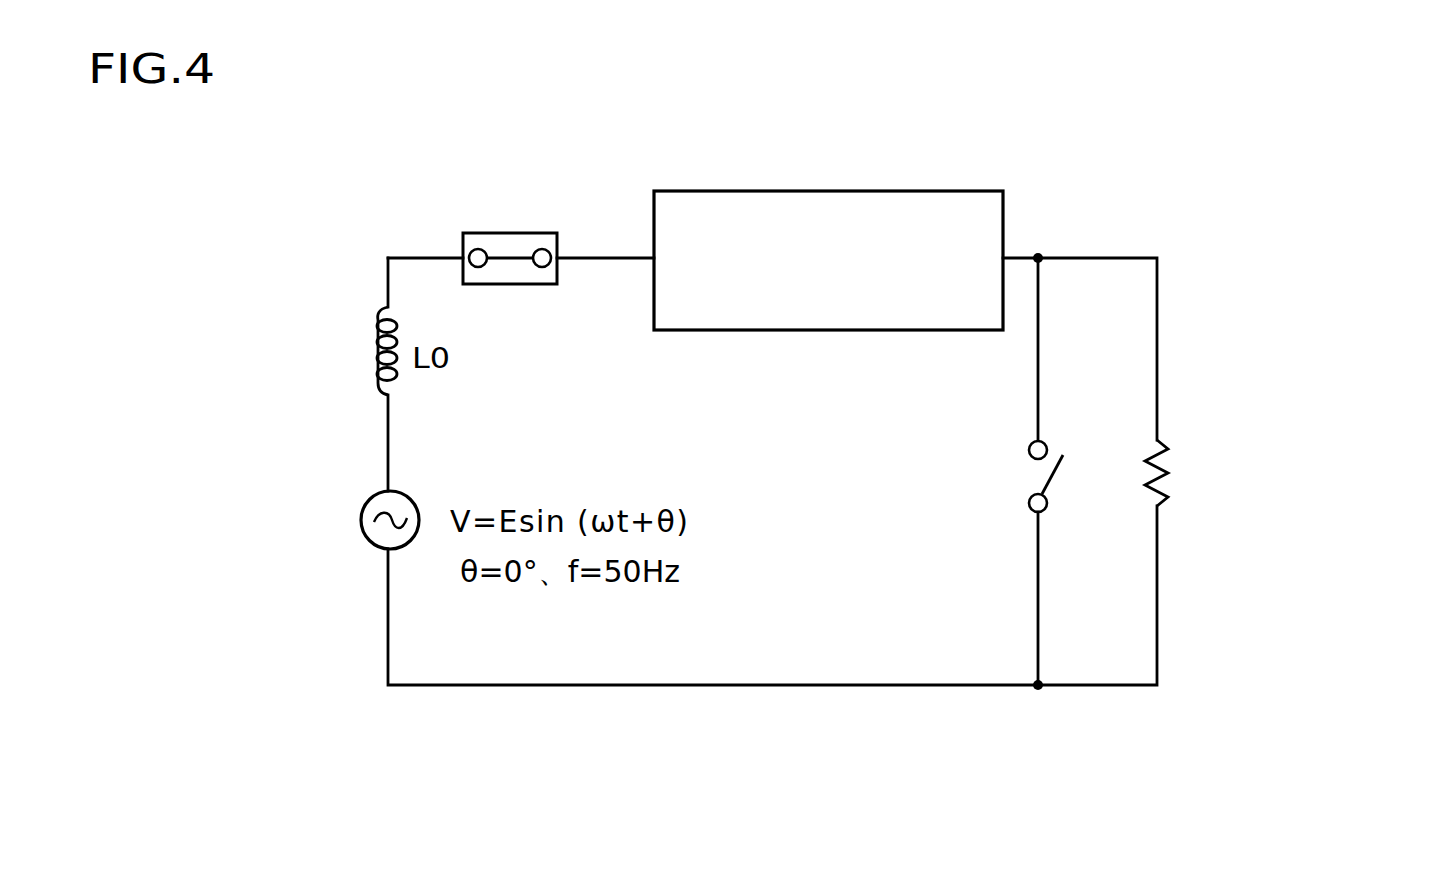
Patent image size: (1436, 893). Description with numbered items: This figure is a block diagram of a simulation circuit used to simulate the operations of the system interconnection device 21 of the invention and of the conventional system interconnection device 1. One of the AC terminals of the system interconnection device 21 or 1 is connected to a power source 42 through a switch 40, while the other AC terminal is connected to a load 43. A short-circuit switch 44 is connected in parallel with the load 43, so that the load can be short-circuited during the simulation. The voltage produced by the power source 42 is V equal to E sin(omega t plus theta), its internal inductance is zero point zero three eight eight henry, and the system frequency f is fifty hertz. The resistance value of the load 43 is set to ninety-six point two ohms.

The conventional system interconnection device 1 is at (816, 226).
The system interconnection device 21 is at (668, 191).
The switch 40 is at (479, 233).
The power source 42 is at (362, 522).
The load 43 is at (1163, 492).
The short-circuit switch 44 is at (1055, 473).